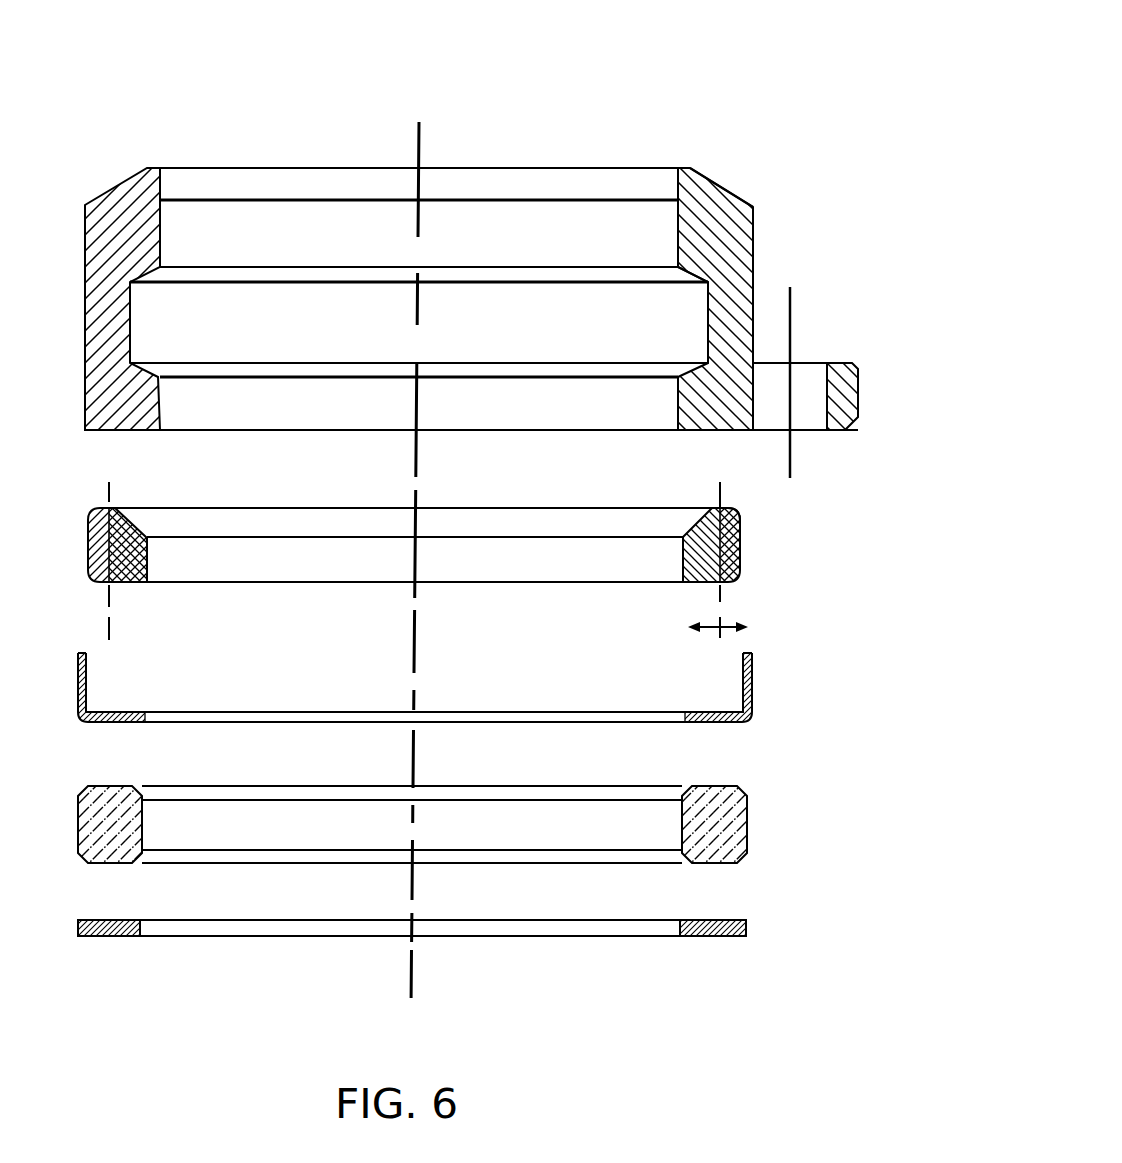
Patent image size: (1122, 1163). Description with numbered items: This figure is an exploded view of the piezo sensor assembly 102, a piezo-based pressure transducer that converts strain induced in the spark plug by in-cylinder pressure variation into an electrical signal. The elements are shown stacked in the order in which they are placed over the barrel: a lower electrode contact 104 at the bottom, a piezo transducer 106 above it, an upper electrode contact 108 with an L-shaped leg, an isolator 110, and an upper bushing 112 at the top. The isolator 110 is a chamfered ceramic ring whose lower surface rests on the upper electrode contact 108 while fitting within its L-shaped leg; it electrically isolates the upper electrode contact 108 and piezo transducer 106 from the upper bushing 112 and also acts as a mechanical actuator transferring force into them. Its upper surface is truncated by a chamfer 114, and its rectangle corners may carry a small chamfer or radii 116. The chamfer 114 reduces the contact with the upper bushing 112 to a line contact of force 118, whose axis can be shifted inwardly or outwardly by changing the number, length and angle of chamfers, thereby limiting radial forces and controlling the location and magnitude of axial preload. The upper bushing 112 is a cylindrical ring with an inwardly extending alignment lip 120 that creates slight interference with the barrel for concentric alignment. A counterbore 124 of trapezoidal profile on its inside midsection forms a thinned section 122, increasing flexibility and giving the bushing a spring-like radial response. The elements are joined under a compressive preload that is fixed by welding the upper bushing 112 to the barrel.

The piezo sensor assembly 102 is at (620, 98).
The lower electrode contact 104 is at (746, 930).
The piezo transducer 106 is at (758, 810).
The upper electrode contact 108 is at (752, 688).
The isolator 110 is at (742, 548).
The upper bushing 112 is at (752, 270).
The chamfer 114 is at (703, 522).
The chamfer or radii 116 is at (731, 508).
The line contact of force 118 is at (721, 597).
The alignment lip 120 is at (696, 171).
The thinned section 122 is at (737, 322).
The counterbore 124 is at (680, 296).